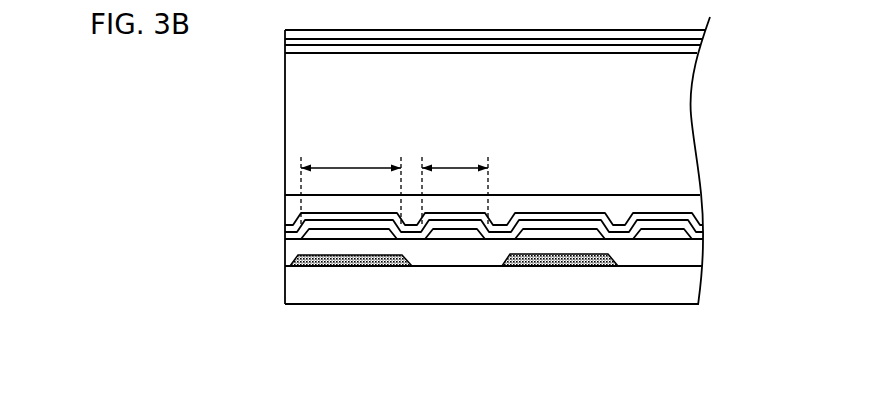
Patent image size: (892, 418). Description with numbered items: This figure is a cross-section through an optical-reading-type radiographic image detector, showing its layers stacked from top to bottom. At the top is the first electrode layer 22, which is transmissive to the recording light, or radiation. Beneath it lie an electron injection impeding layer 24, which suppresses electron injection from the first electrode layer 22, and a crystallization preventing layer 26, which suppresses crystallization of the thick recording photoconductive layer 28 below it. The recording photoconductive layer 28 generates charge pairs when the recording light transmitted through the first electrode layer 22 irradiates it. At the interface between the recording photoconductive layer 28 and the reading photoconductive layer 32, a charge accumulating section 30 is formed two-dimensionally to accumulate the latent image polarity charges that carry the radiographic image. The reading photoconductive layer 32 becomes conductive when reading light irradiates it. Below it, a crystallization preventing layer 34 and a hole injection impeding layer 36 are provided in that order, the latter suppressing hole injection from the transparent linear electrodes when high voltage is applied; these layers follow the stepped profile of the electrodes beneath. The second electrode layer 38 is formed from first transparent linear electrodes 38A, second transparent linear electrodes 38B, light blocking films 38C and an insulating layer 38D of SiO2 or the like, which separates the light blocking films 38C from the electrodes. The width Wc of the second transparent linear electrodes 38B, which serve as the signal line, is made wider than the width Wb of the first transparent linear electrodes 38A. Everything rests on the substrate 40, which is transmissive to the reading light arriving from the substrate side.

The first electrode layer 22 is at (285, 36).
The electron injection impeding layer 24 is at (285, 43).
The crystallization preventing layer 26 is at (285, 51).
The recording photoconductive layer 28 is at (297, 118).
The charge accumulating section 30 is at (297, 194).
The reading photoconductive layer 32 is at (290, 205).
The crystallization preventing layer 34 is at (287, 231).
The hole injection impeding layer 36 is at (287, 234).
The second electrode layer 38 is at (292, 251).
The first transparent linear electrodes 38A is at (450, 235).
The second transparent linear electrodes 38B is at (363, 235).
The light blocking films 38C is at (322, 262).
The insulating layer 38D is at (697, 252).
The substrate 40 is at (292, 287).
The width of the second transparent linear electrodes Wc is at (353, 168).
The width of the first transparent linear electrodes Wb is at (457, 168).